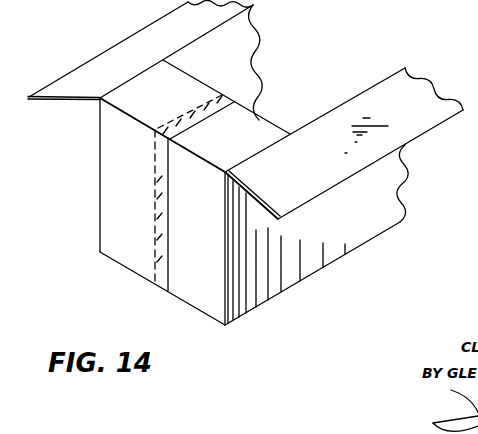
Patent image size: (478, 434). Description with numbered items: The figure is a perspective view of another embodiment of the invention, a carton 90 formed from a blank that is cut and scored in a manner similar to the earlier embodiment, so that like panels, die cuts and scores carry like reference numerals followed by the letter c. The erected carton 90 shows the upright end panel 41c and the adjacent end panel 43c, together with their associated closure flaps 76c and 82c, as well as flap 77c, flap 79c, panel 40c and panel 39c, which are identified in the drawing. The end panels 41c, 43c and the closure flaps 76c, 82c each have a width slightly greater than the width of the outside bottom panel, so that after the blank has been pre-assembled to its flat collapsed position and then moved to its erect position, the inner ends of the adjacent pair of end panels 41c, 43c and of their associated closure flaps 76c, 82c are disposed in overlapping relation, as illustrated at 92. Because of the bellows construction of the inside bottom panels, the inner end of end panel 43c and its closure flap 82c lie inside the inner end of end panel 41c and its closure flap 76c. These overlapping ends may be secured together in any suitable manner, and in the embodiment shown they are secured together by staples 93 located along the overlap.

The carton 90 is at (380, 55).
The outer flap 77c is at (83, 83).
The closure flap 76c is at (172, 81).
The inner flap panel 39c is at (247, 27).
The closure flap 82c is at (233, 123).
The outer flap 79c is at (340, 168).
The side wall 40c is at (338, 255).
The end panel 41c is at (125, 238).
The end panel 43c is at (222, 267).
The overlapping relation 92 is at (158, 160).
The staples 93 is at (160, 160).